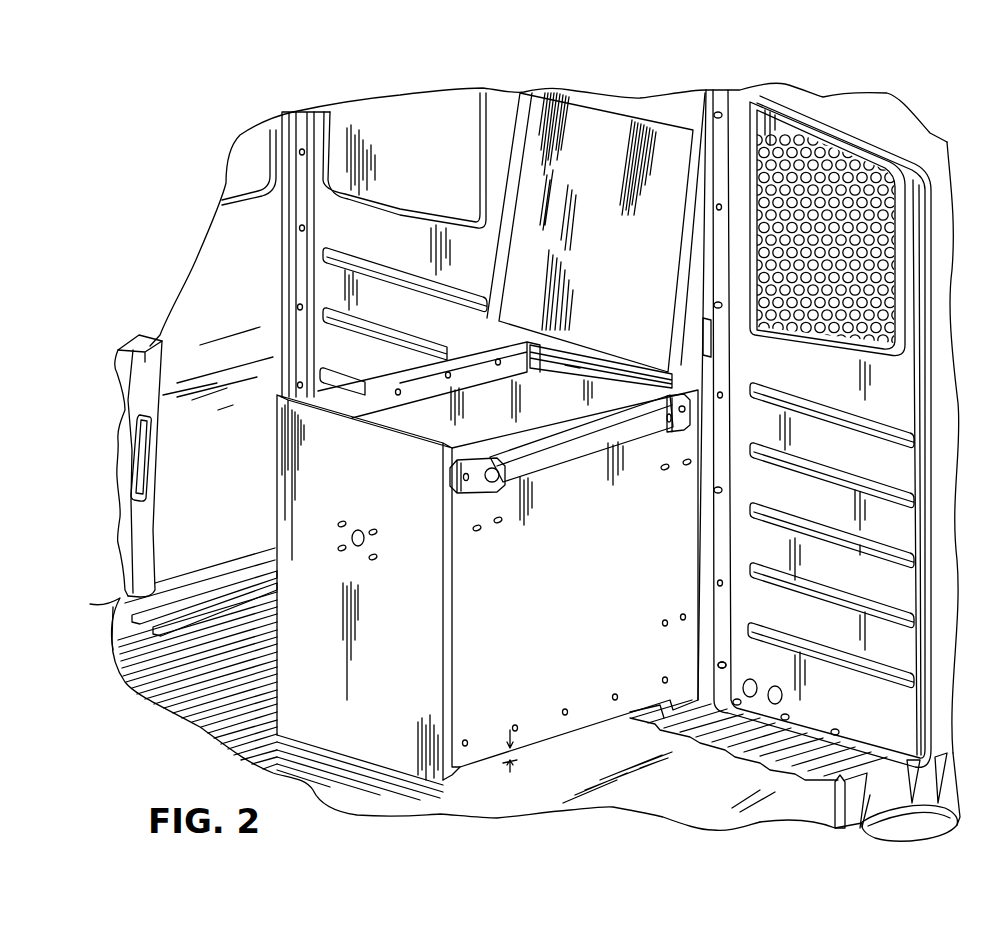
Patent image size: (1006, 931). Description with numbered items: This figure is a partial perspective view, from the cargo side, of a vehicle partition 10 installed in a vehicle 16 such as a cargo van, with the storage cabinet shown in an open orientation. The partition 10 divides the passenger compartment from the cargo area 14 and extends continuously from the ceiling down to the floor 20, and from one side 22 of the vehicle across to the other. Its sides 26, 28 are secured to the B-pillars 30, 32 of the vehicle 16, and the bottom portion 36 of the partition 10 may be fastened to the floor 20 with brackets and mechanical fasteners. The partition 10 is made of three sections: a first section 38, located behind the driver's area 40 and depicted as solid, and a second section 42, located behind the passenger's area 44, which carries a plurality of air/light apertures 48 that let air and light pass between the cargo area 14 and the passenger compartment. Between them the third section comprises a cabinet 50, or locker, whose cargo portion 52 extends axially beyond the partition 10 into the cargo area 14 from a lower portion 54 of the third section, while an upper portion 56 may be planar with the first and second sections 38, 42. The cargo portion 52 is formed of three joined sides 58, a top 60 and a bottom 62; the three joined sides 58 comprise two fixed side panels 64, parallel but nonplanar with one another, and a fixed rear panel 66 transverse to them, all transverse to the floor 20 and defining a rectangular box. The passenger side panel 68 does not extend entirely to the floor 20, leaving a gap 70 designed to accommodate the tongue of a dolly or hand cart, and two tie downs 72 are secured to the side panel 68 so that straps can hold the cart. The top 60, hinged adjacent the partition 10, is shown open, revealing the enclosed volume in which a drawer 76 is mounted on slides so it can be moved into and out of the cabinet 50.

The vehicle partition 10 is at (499, 95).
The cargo area 14 is at (190, 287).
The vehicle 16 is at (116, 598).
The floor 20 is at (142, 677).
The side of the vehicle 22 is at (211, 233).
The side of the partition 26 is at (318, 118).
The side of the partition 28 is at (917, 204).
The B-pillar 30 is at (292, 112).
The B-pillar 32 is at (938, 241).
The bottom portion of the partition 36 is at (908, 738).
The first section of the partition 38 is at (400, 100).
The driver's area 40 is at (432, 104).
The second section of the partition 42 is at (838, 133).
The passenger's area 44 is at (883, 170).
The air/light apertures 48 is at (790, 145).
The cabinet 50 is at (598, 708).
The cargo portion 52 is at (399, 768).
The lower portion of the third section 54 is at (707, 537).
The upper portion of the third section 56 is at (705, 318).
The joined sides 58 is at (393, 386).
The top 60 is at (614, 140).
The bottom 62 is at (448, 783).
The side panels 64 is at (447, 347).
The rear panel 66 is at (300, 476).
The passenger side panel 68 is at (680, 637).
The gap 70 is at (506, 767).
The tie downs 72 is at (450, 476).
The drawer 76 is at (565, 366).